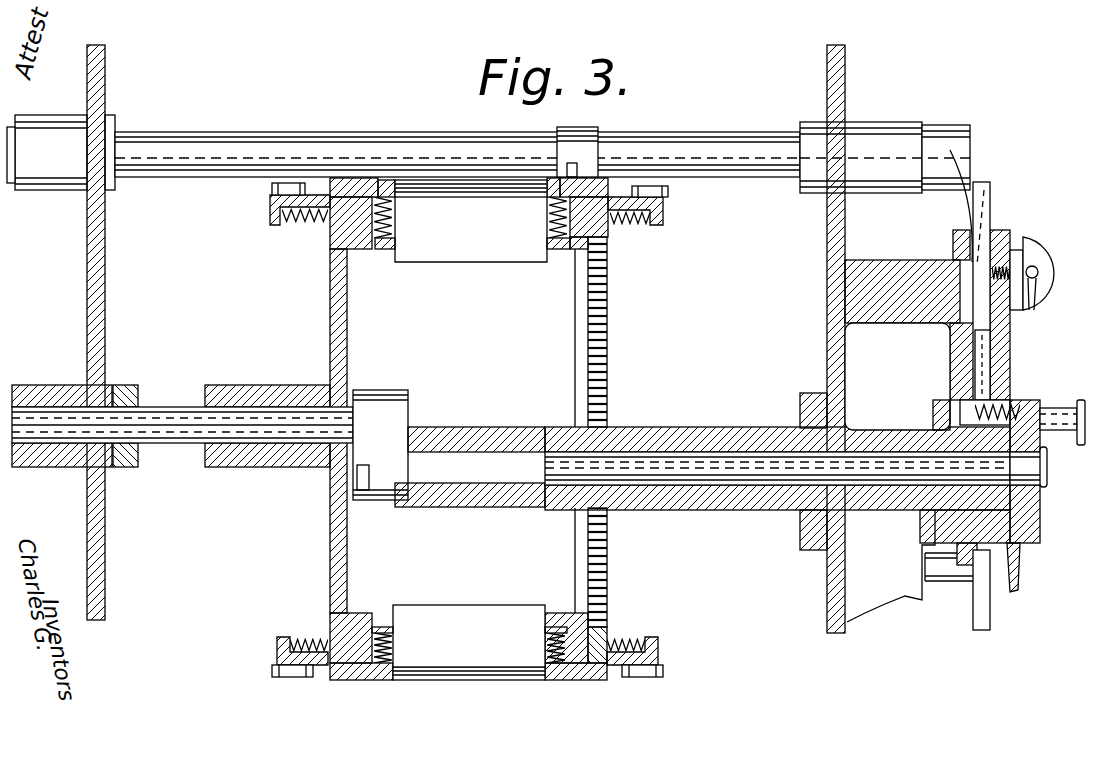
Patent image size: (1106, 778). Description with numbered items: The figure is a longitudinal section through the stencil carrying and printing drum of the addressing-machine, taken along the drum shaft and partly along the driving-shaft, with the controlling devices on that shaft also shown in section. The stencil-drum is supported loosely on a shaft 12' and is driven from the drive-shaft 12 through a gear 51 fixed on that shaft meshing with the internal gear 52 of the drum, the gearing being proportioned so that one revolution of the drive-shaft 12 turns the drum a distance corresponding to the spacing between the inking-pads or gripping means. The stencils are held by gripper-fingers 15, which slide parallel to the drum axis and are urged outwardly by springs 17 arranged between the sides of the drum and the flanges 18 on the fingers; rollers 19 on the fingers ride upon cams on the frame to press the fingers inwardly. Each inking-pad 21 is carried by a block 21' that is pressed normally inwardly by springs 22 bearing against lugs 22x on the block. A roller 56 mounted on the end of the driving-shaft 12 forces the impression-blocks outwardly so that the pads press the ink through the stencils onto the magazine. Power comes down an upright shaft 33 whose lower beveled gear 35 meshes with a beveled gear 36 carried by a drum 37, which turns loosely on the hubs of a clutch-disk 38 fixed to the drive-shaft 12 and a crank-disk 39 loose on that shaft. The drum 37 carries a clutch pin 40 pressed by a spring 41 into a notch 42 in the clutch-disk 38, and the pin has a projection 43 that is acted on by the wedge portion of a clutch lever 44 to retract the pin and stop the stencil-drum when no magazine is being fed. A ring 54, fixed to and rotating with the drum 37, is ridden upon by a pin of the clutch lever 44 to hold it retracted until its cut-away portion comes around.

The drive-shaft 12 is at (794, 440).
The shaft 12' is at (210, 424).
The gripper-fingers 15 is at (390, 180).
The springs 17 is at (300, 223).
The flanges 18 is at (275, 221).
The rollers 19 is at (272, 190).
The inking-pad 21 is at (470, 391).
The block 21' is at (470, 432).
The springs 22 is at (394, 215).
The lugs 22x is at (389, 250).
The upright shaft 33 is at (990, 201).
The beveled gear 35 is at (956, 361).
The beveled gear 36 is at (1020, 393).
The drum 37 is at (1023, 528).
The clutch-disk 38 is at (933, 403).
The crank-disk 39 is at (1033, 418).
The clutch pin 40 is at (1045, 448).
The spring 41 is at (1035, 407).
The notch 42 is at (947, 413).
The projection 43 is at (1017, 357).
The clutch lever 44 is at (983, 571).
The gear 51 is at (608, 518).
The internal gear 52 is at (608, 318).
The ring 54 is at (957, 563).
The roller 56 is at (497, 500).